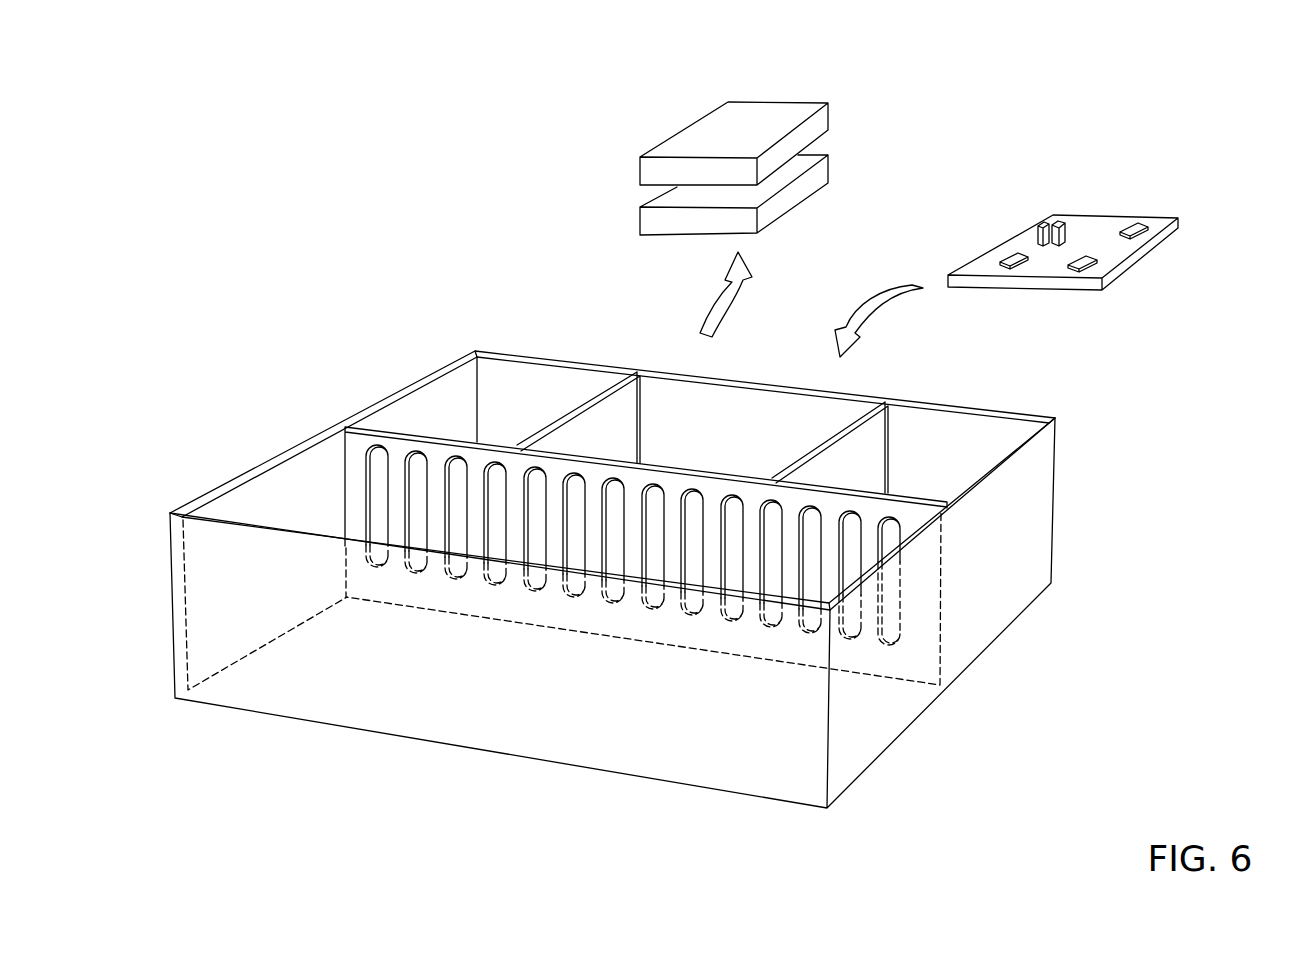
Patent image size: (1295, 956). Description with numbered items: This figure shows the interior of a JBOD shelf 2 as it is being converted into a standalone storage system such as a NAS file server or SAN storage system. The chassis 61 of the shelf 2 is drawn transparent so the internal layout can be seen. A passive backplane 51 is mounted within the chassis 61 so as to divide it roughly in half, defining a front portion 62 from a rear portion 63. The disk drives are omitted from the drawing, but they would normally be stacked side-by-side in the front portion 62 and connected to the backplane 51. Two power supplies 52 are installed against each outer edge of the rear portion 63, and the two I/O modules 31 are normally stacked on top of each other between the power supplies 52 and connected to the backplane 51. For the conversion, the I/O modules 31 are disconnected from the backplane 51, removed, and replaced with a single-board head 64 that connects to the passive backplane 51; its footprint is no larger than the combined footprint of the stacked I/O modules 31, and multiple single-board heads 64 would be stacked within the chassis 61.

The JBOD shelf 2 is at (283, 793).
The I/O modules 31 is at (810, 102).
The passive backplane 51 is at (905, 683).
The power supplies 52 is at (578, 398).
The chassis 61 is at (877, 760).
The front portion 62 is at (290, 436).
The rear portion 63 is at (425, 353).
The single-board head 64 is at (1085, 228).